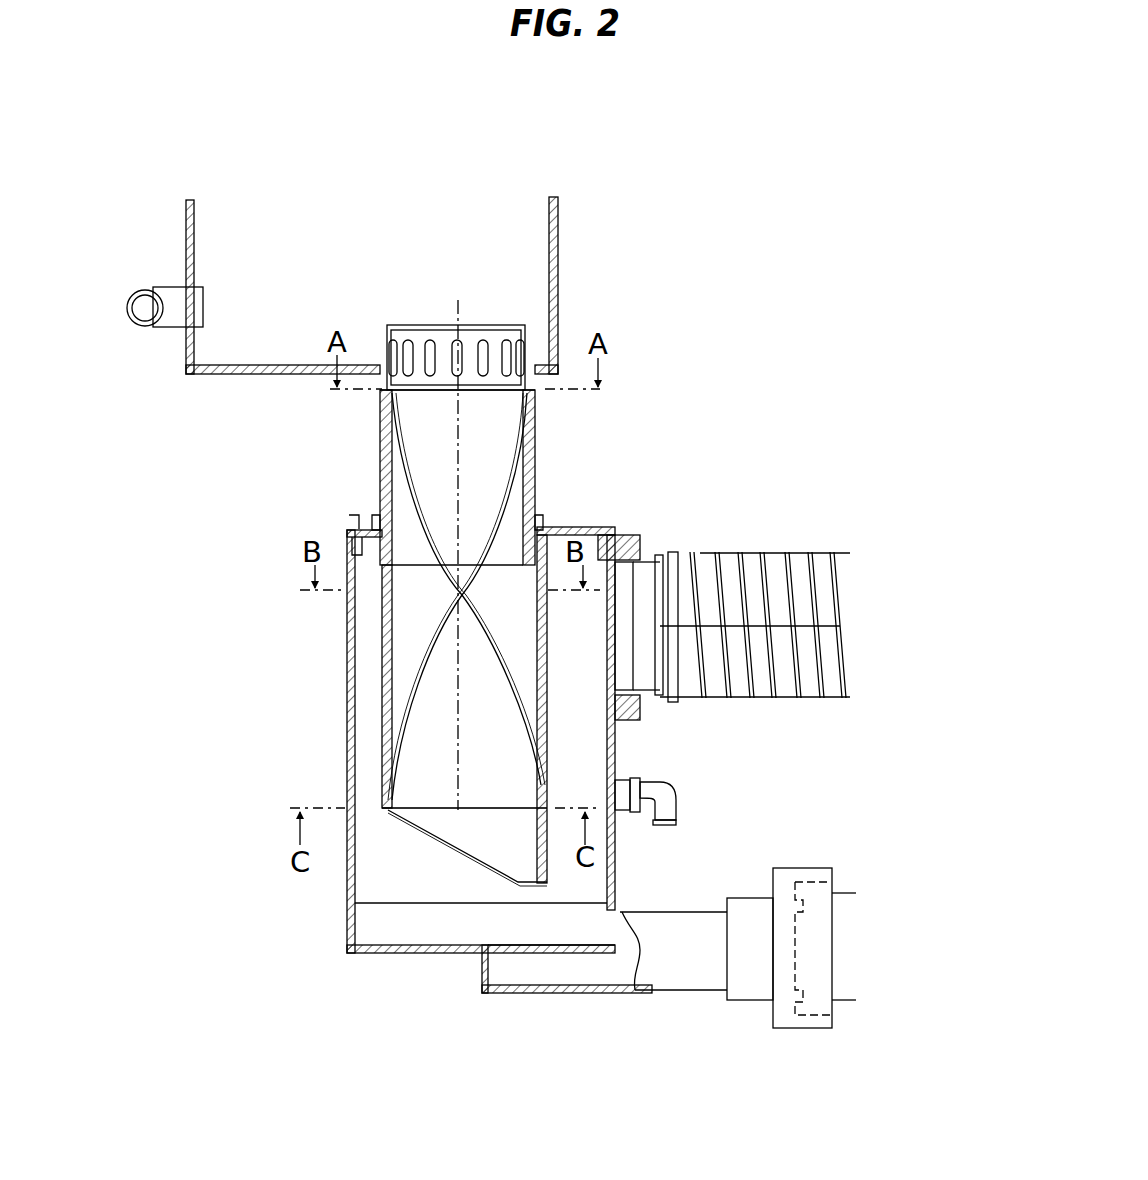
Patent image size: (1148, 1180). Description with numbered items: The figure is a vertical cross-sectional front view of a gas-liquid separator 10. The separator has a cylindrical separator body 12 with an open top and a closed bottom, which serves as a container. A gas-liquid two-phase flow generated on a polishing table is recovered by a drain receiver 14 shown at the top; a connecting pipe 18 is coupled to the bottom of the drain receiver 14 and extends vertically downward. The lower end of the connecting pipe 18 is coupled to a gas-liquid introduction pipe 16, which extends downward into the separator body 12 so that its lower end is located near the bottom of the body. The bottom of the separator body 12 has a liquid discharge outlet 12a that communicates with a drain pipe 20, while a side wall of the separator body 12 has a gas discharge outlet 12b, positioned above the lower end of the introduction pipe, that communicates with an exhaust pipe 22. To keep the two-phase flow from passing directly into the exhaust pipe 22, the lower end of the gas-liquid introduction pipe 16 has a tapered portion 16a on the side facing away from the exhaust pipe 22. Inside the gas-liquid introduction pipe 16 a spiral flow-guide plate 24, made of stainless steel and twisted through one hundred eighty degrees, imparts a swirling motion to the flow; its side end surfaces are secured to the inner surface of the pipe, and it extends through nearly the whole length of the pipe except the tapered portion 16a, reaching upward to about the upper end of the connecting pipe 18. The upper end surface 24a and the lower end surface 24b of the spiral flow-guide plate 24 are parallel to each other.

The gas-liquid separator 10 is at (706, 176).
The separator body 12 is at (350, 720).
The liquid discharge outlet 12a is at (568, 955).
The gas discharge outlet 12b is at (608, 592).
The drain receiver 14 is at (558, 226).
The gas-liquid introduction pipe 16 is at (383, 640).
The tapered portion 16a is at (440, 830).
The connecting pipe 18 is at (530, 425).
The drain pipe 20 is at (690, 992).
The exhaust pipe 22 is at (762, 700).
The spiral flow-guide plate 24 is at (510, 482).
The upper end surface 24a is at (443, 340).
The lower end surface 24b is at (412, 818).